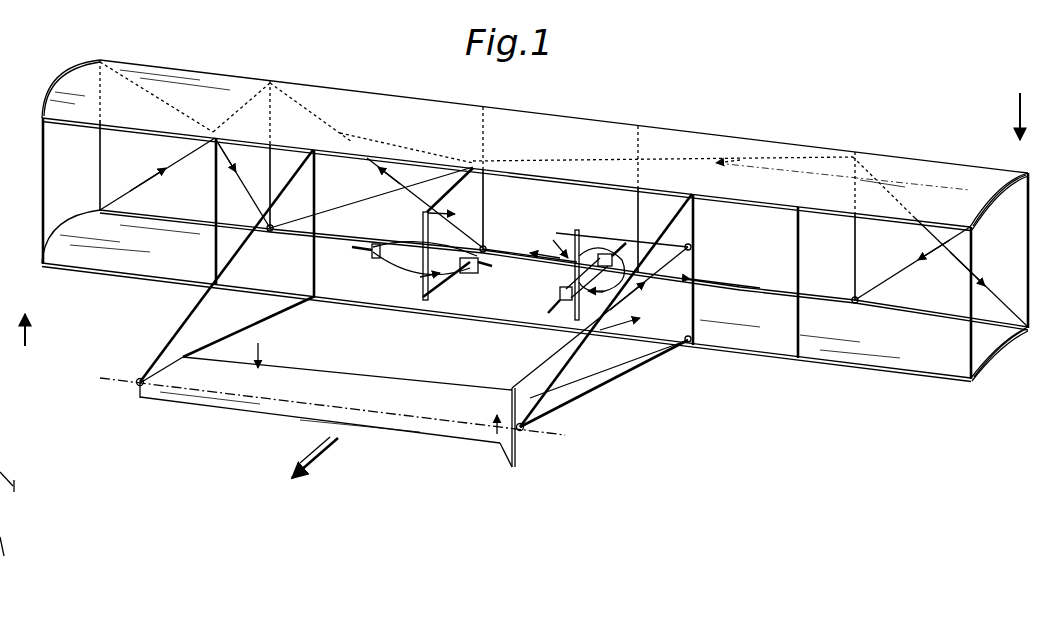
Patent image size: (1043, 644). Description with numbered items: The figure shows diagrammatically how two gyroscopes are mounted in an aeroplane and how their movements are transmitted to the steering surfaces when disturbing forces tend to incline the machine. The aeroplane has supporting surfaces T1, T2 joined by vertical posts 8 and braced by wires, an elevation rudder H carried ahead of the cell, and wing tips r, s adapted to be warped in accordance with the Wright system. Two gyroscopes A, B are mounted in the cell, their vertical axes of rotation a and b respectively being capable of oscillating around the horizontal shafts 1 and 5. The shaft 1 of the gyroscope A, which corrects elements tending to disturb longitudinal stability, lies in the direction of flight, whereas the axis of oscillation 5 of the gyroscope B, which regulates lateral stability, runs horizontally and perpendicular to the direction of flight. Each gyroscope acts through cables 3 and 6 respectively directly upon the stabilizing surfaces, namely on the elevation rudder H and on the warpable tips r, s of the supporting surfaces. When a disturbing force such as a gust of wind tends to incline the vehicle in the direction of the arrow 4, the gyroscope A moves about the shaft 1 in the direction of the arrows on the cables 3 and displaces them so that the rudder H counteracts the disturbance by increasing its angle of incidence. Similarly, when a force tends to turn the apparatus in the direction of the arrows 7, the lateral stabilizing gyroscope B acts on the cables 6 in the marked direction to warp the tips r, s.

The horizontal shaft 1 is at (612, 245).
The cables 3 is at (668, 243).
The arrow 4 is at (413, 300).
The horizontal shaft 5 is at (362, 257).
The cables 6 is at (172, 166).
The arrows 7 is at (531, 285).
The vertical posts / struts 8 is at (100, 57).
The supporting surface T1 is at (371, 102).
The supporting surface T2 is at (153, 268).
The wing tip r is at (112, 57).
The wing tip s is at (1000, 178).
The elevation rudder H is at (356, 380).
The gyroscope A is at (578, 277).
The vertical axis of rotation a is at (584, 226).
The gyroscope B is at (425, 270).
The vertical axis of rotation b is at (421, 231).